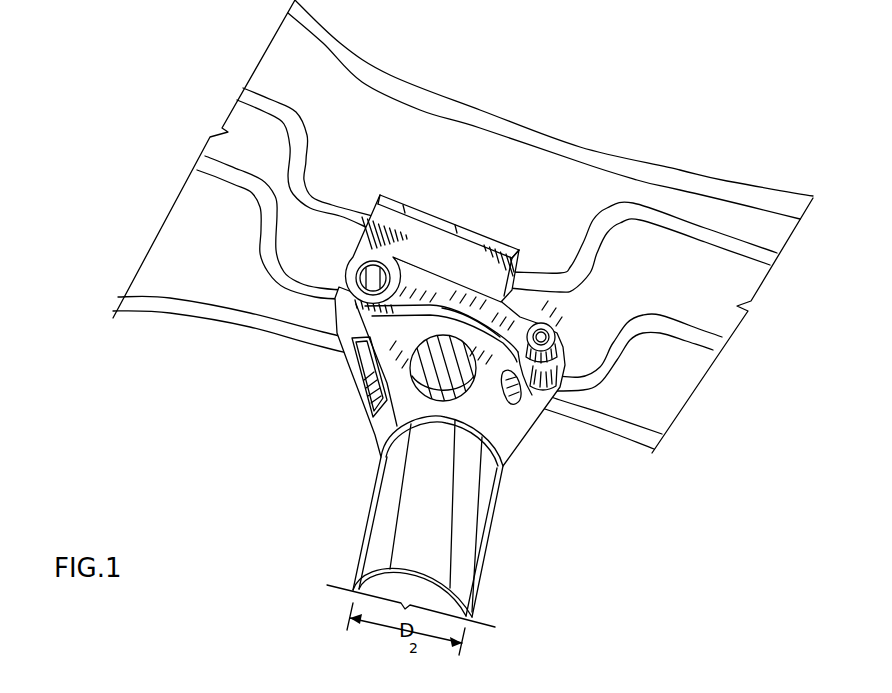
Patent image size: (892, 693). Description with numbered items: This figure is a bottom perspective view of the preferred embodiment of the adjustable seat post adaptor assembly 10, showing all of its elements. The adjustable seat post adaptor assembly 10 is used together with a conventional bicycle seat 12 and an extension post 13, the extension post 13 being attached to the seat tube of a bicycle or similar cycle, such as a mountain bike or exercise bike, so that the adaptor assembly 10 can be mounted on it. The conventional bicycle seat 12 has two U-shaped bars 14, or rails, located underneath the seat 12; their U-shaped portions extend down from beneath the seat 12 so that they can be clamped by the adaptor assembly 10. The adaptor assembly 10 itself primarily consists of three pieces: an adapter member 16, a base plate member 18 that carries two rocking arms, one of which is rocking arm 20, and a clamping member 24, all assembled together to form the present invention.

The adjustable seat post adaptor assembly 10 is at (644, 110).
The bicycle seat 12 is at (327, 70).
The extension post 13 is at (472, 528).
The U-shaped bars 14 is at (243, 90).
The adapter member 16 is at (355, 393).
The base plate member 18 is at (455, 226).
The rocking arm 20 is at (519, 358).
The clamping member 24 is at (403, 186).